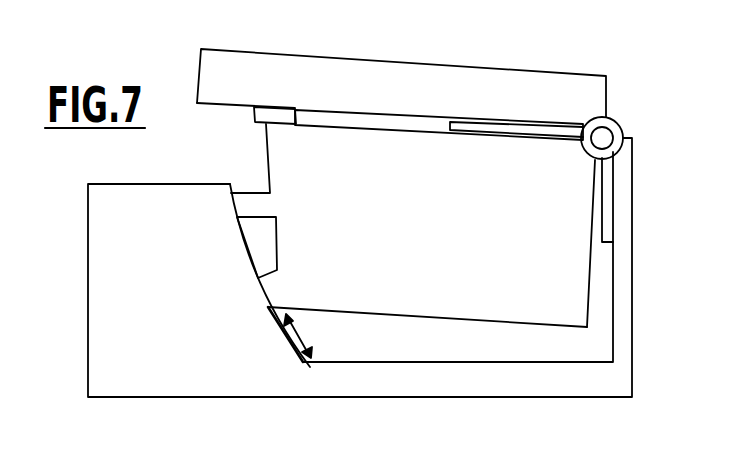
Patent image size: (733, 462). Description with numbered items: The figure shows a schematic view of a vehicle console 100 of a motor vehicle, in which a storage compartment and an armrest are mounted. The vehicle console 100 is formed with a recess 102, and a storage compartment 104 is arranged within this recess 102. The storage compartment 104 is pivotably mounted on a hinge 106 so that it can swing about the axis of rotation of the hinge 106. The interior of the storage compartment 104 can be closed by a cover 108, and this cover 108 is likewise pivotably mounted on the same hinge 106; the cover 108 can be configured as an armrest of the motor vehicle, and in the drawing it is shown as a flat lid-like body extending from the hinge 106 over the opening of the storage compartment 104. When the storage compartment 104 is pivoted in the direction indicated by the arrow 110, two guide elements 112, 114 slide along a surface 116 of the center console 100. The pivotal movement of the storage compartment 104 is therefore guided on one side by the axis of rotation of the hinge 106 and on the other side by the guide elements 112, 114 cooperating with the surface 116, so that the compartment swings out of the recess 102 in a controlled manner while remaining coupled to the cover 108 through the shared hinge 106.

The vehicle console 100 is at (88, 296).
The recess 102 is at (470, 341).
The storage compartment 104 is at (590, 272).
The hinge 106 is at (608, 132).
The cover 108 is at (478, 78).
The arrow 110 is at (300, 338).
The guide element 112 is at (243, 207).
The guide element 114 is at (270, 294).
The surface 116 is at (283, 336).